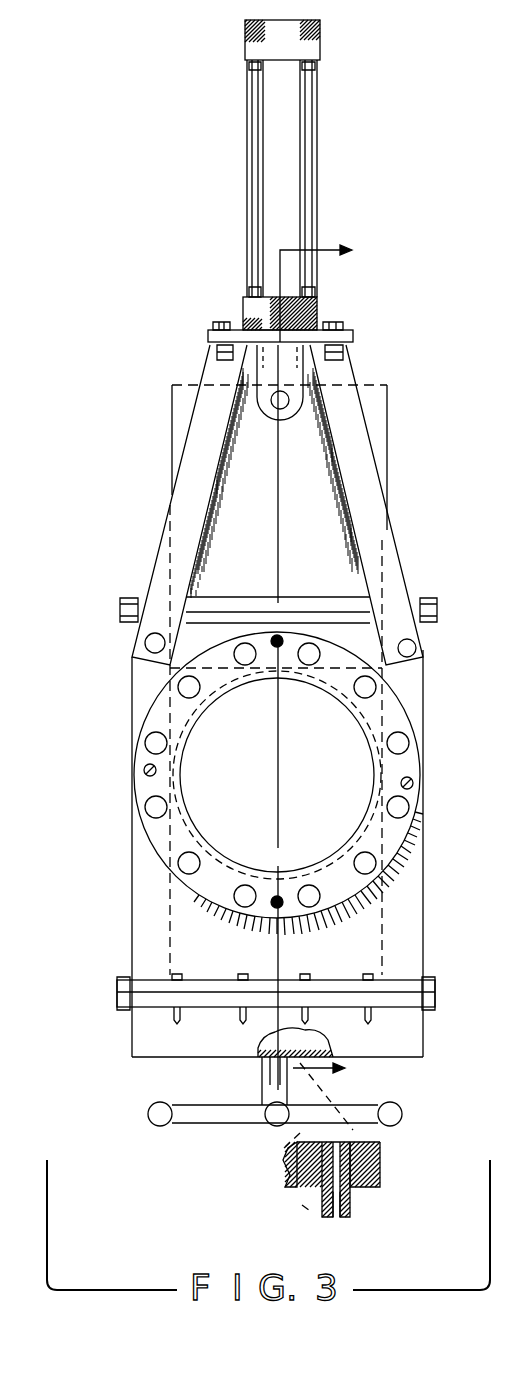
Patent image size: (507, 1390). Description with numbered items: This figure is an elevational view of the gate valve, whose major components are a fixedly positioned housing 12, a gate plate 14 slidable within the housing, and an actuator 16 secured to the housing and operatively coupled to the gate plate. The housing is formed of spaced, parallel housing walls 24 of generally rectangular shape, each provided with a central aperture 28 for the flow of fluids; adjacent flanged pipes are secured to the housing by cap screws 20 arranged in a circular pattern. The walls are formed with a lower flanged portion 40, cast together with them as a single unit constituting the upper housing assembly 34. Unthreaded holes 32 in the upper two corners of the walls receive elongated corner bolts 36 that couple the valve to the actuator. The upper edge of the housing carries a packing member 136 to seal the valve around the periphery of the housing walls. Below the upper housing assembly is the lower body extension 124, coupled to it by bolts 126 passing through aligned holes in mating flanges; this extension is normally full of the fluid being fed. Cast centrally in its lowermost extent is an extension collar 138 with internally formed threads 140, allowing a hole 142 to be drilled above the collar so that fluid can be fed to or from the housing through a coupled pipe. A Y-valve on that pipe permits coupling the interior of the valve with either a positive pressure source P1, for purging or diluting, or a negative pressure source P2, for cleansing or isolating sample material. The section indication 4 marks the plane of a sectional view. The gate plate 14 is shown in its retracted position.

The section line 4- 4 is at (325, 725).
The housing 12 is at (433, 944).
The gate plate 14 is at (384, 386).
The actuator 16 is at (188, 110).
The cap screws 20 is at (383, 894).
The housing walls 24 is at (423, 746).
The central aperture 28 is at (347, 804).
The unthreaded holes 32 is at (413, 649).
The upper housing assembly 34 is at (114, 910).
The corner bolts 36 is at (417, 668).
The lower flanged portion 40 is at (427, 976).
The lower body extension 124 is at (428, 1072).
The bolts 126 is at (121, 1010).
The packing member 136 is at (139, 602).
The extension collar 138 is at (320, 1193).
The internally formed threads 140 is at (365, 1203).
The hole 142 is at (370, 1141).
The positive pressure source P1 is at (263, 1114).
The negative pressure source P2 is at (390, 1114).